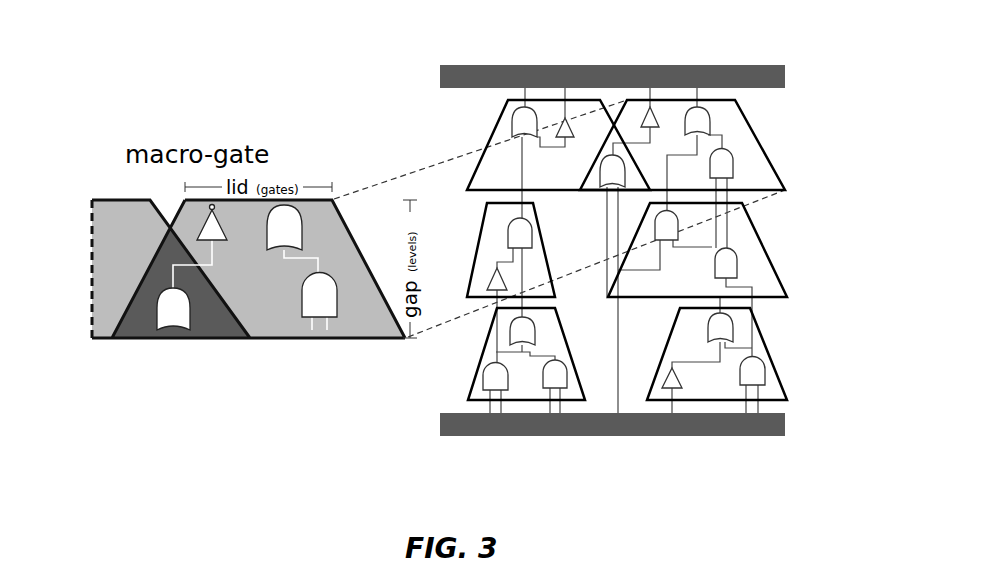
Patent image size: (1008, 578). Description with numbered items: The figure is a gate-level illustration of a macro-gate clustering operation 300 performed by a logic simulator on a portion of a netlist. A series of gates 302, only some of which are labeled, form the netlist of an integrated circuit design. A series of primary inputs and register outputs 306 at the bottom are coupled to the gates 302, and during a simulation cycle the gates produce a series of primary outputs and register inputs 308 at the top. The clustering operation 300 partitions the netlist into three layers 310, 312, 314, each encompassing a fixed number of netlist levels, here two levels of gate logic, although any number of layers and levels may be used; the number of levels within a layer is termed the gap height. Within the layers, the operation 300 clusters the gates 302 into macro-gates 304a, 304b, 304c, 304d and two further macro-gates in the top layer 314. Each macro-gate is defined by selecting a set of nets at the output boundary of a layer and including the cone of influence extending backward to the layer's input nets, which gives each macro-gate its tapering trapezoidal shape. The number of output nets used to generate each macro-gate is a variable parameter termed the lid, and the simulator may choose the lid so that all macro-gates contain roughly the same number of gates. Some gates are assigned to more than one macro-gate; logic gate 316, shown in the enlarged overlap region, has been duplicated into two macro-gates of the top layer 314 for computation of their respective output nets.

The macro-gate clustering operation 300 is at (834, 30).
The gates 302 is at (507, 224).
The macro-gate 304a is at (468, 396).
The macro-gate 304b is at (790, 306).
The macro-gate 304c is at (543, 235).
The macro-gate 304d is at (790, 200).
The primary inputs and register outputs 306 is at (553, 437).
The primary outputs and register inputs 308 is at (642, 63).
The layer 310 is at (626, 368).
The layer 312 is at (664, 248).
The layer 314 is at (654, 151).
The logic gate 316 is at (226, 269).